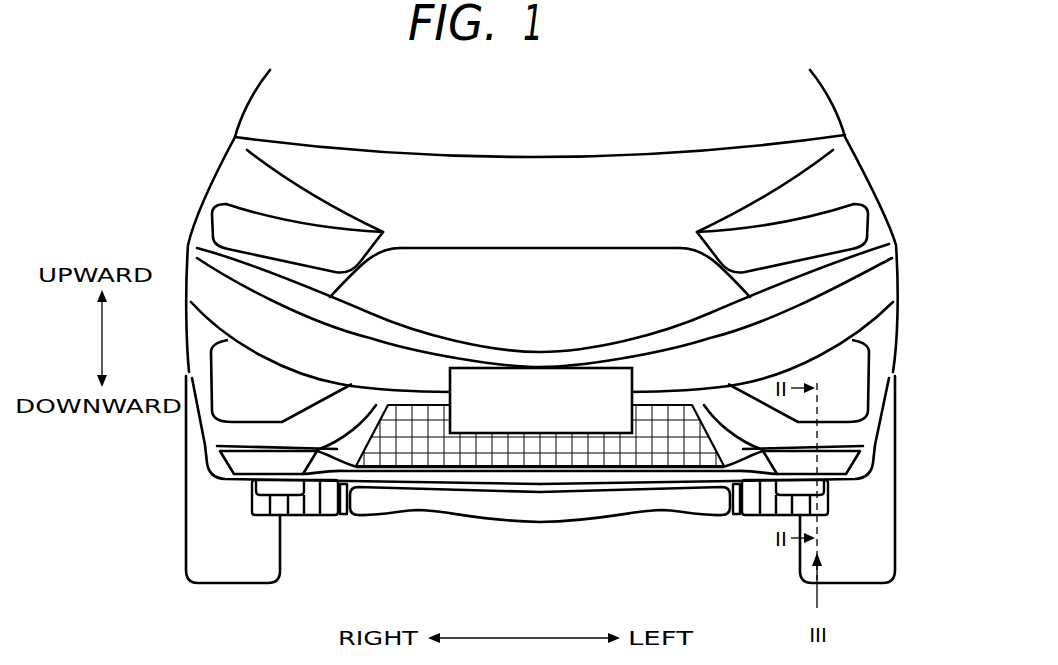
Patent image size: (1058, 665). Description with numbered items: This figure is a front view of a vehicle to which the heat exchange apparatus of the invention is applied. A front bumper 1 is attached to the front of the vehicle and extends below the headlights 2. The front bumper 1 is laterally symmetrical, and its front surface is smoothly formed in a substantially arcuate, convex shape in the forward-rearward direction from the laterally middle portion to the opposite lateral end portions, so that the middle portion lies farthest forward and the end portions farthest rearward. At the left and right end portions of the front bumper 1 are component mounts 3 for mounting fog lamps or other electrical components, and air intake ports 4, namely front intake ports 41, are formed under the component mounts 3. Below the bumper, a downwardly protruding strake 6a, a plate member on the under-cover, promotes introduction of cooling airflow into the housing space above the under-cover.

The front bumper 1 is at (882, 346).
The headlights 2 is at (238, 235).
The component mounts 3 is at (855, 398).
The air intake ports 4 is at (577, 449).
The front intake ports 41 is at (832, 457).
The strake 6a is at (825, 490).